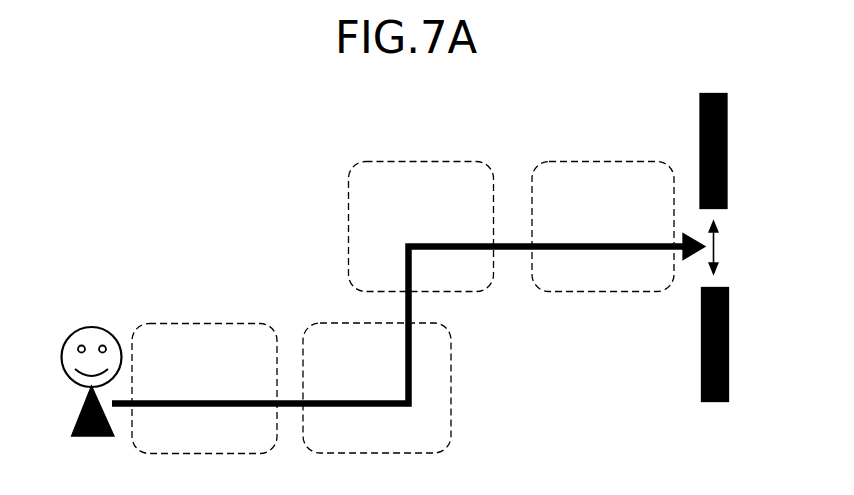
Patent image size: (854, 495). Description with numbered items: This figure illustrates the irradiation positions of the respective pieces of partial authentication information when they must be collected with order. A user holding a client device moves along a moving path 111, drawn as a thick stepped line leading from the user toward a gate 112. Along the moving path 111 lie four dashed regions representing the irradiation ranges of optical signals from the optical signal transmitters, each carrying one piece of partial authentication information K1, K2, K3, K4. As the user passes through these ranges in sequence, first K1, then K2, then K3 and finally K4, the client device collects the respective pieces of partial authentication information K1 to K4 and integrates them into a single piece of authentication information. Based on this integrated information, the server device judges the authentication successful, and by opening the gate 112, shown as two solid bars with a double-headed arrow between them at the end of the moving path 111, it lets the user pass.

The piece of partial authentication information K1 is at (190, 323).
The piece of partial authentication information K2 is at (328, 323).
The piece of partial authentication information K3 is at (407, 162).
The piece of partial authentication information K4 is at (589, 162).
The moving path 111 is at (510, 251).
The gate 112 is at (723, 247).